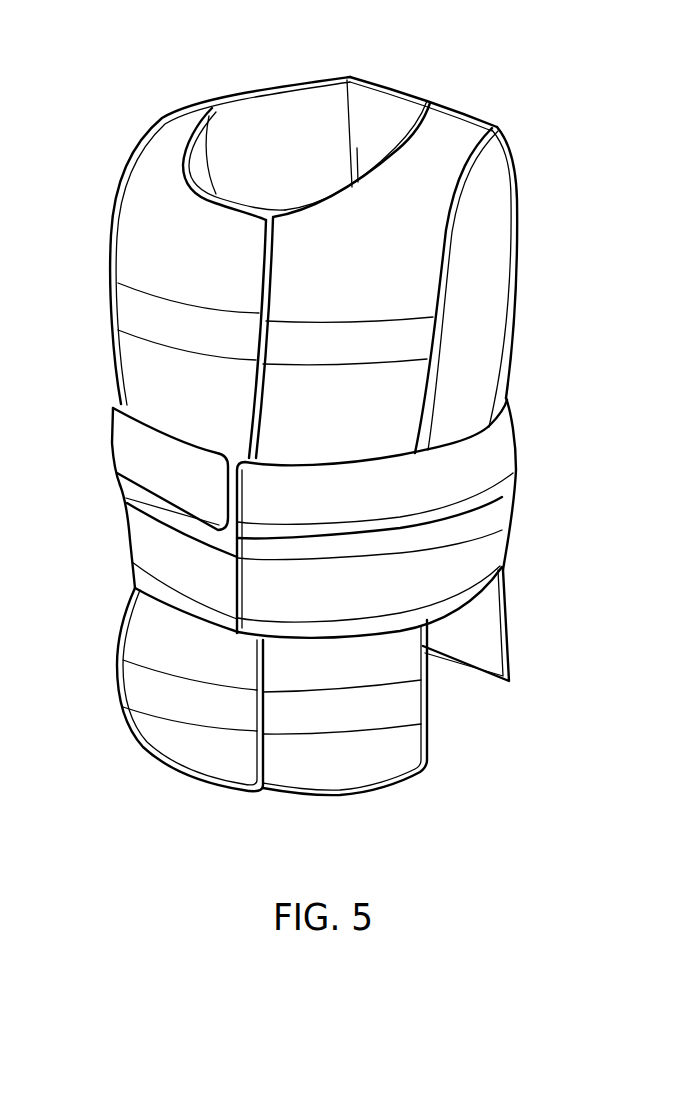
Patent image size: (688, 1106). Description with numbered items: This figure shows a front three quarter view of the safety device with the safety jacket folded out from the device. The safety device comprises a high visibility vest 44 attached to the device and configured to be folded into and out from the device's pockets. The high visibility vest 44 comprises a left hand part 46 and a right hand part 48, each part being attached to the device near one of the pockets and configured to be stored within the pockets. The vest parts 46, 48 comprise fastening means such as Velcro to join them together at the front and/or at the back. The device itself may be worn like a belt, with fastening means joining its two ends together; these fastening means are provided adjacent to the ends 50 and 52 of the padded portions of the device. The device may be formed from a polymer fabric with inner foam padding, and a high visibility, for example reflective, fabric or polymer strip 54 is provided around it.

The high visibility vest 44 is at (503, 88).
The left hand part 46 is at (418, 272).
The right hand part 48 is at (142, 247).
The end of padded portion 50 is at (227, 497).
The end of padded portion 52 is at (237, 505).
The high visibility strip 54 is at (443, 537).